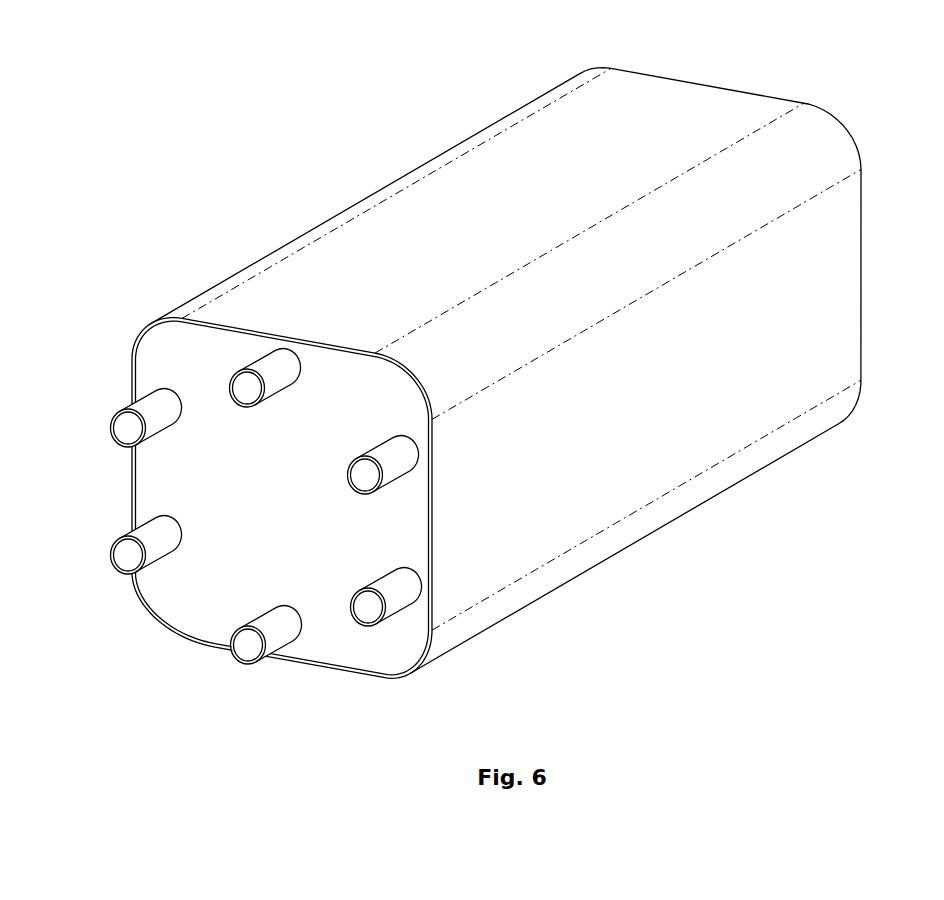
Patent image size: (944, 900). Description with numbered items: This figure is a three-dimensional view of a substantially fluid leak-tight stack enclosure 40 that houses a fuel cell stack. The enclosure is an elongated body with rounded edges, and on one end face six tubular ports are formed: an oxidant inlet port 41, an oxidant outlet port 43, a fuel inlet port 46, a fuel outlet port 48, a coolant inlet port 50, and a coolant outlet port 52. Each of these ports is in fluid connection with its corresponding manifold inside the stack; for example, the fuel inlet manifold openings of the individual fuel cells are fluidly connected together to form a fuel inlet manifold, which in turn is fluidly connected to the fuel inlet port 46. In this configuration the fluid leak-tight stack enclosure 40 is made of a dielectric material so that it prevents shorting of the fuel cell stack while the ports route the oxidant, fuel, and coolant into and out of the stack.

The stack enclosure 40 is at (551, 588).
The oxidant inlet port 41 is at (242, 386).
The oxidant outlet port 43 is at (248, 647).
The fuel inlet port 46 is at (120, 427).
The fuel outlet port 48 is at (370, 607).
The coolant inlet port 50 is at (365, 472).
The coolant outlet port 52 is at (123, 555).